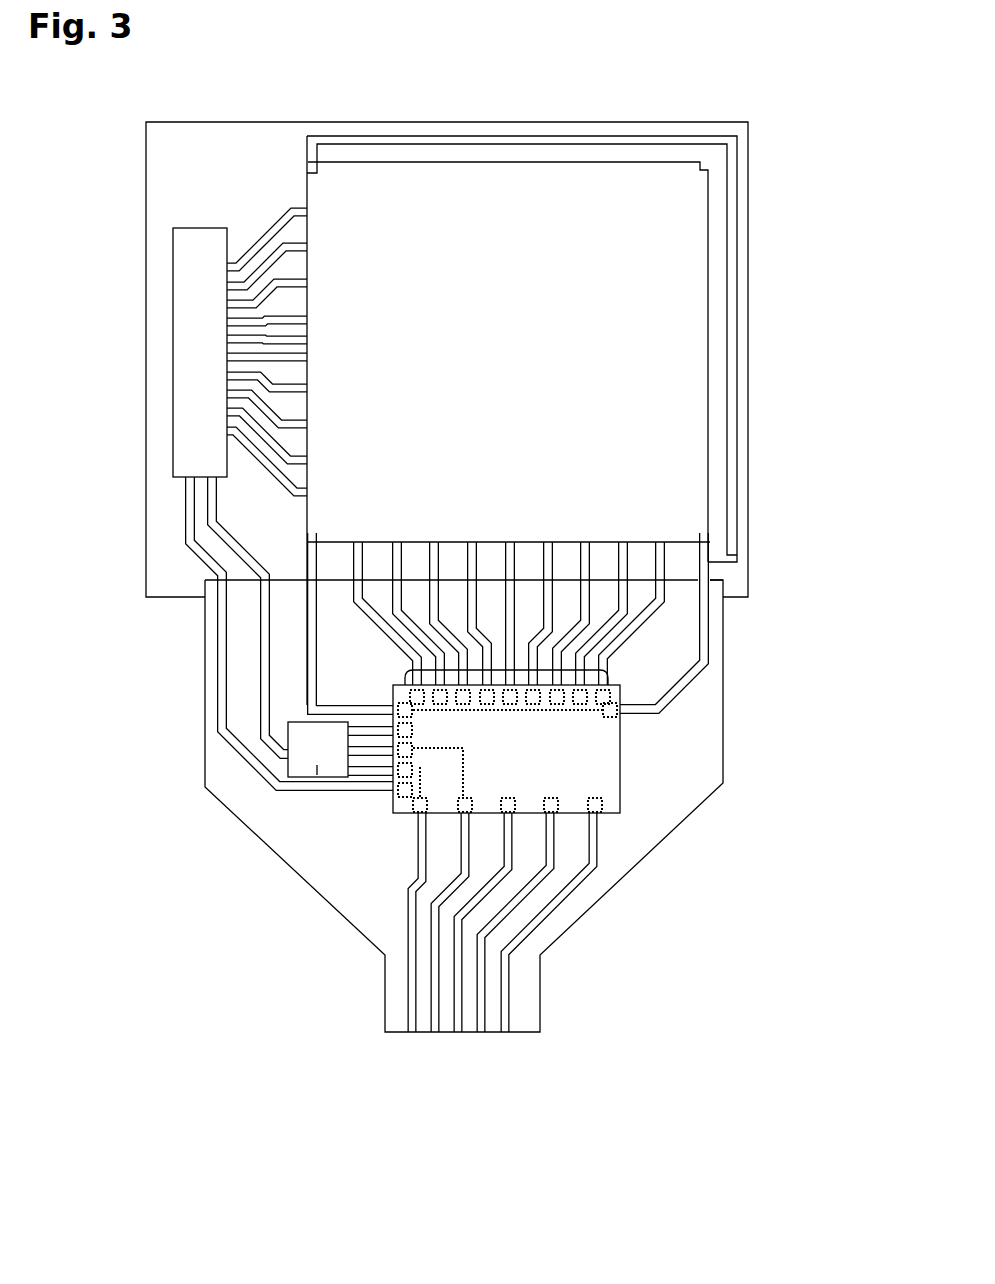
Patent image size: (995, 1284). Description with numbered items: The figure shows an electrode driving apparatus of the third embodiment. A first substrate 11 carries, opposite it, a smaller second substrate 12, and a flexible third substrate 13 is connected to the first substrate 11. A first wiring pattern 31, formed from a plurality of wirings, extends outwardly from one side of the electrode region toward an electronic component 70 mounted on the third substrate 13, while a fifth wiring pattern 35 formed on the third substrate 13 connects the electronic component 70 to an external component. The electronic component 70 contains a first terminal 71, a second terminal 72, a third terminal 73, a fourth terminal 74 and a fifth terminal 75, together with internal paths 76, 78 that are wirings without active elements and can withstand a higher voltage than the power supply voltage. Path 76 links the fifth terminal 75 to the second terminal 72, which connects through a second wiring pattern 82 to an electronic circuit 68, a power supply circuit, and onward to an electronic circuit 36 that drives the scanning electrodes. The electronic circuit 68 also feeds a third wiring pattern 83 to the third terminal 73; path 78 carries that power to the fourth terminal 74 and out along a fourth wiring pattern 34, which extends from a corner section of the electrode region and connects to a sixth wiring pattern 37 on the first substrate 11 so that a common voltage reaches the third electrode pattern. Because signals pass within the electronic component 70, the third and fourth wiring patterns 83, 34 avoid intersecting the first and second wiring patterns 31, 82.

The first substrate 11 is at (743, 217).
The second substrate 12 is at (700, 186).
The third substrate 13 is at (668, 826).
The first wiring pattern 31 is at (668, 535).
The fourth wiring pattern 34 is at (703, 617).
The fifth wiring pattern 35 is at (403, 1038).
The electronic circuit 36 is at (195, 331).
The sixth wiring pattern 37 is at (718, 243).
The electronic circuit 68 is at (300, 778).
The electronic component 70 is at (720, 787).
The first terminal 71 is at (620, 652).
The second terminal 72 is at (317, 765).
The third terminal 73 is at (393, 698).
The fourth terminal 74 is at (555, 714).
The fifth terminal 75 is at (633, 790).
The path 76 is at (463, 760).
The path 78 is at (470, 748).
The second wiring pattern 82 is at (318, 205).
The third wiring pattern 83 is at (310, 627).